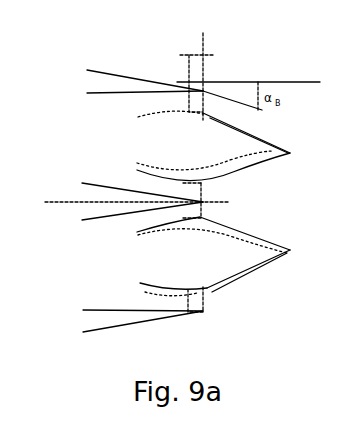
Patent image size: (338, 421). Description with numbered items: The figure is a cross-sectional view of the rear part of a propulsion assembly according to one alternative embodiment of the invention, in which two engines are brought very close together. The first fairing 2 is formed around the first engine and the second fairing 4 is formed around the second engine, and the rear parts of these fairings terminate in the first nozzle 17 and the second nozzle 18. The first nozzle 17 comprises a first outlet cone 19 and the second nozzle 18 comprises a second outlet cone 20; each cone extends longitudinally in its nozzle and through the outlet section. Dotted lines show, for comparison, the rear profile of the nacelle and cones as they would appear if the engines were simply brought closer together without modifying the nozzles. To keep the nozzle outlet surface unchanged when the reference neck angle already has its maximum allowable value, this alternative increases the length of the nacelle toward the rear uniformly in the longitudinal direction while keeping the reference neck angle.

The first fairing 2 is at (148, 326).
The second fairing 4 is at (116, 85).
The first nozzle 17 is at (95, 293).
The second nozzle 18 is at (95, 108).
The first outlet cone 19 is at (237, 277).
The second outlet cone 20 is at (229, 154).